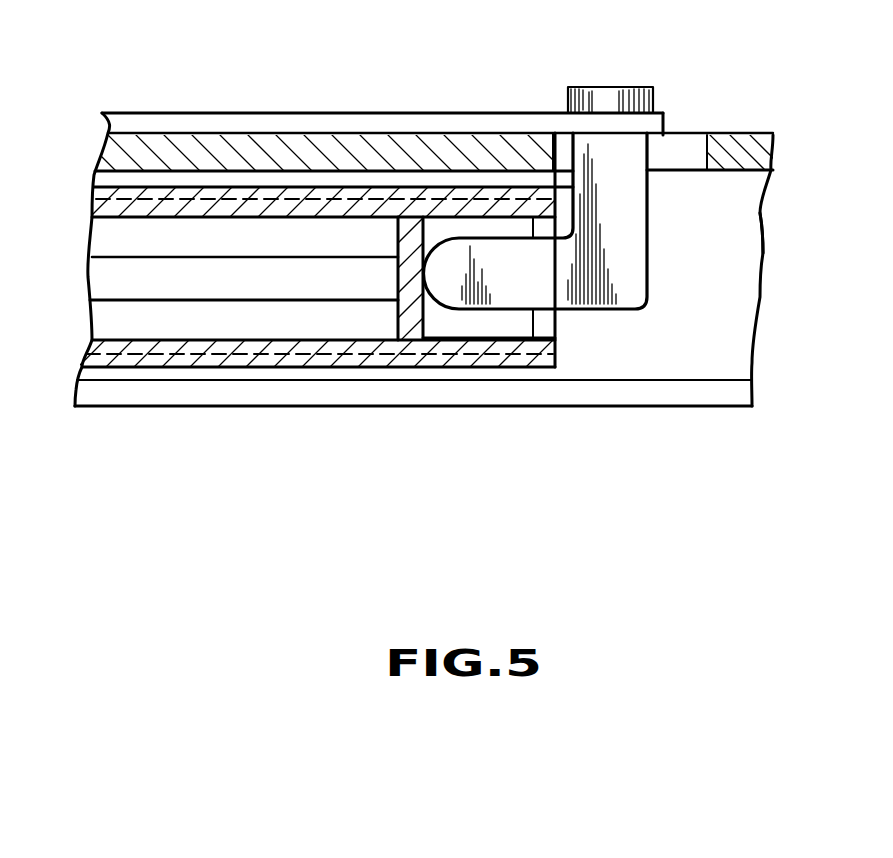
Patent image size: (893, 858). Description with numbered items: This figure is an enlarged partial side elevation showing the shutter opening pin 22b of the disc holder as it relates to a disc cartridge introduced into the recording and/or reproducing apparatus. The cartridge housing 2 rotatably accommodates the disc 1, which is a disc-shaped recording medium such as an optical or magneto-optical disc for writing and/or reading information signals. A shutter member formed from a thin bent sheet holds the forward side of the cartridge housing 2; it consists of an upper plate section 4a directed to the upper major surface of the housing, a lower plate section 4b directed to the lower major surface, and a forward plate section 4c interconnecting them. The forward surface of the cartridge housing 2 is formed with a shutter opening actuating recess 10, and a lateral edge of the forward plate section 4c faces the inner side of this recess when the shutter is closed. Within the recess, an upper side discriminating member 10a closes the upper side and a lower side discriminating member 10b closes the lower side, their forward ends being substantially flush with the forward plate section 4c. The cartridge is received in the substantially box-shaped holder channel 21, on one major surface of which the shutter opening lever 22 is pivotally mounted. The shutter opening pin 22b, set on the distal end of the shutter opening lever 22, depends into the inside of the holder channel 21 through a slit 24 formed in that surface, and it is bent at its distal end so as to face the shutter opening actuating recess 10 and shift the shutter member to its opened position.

The disc 1 is at (104, 273).
The cartridge housing 2 is at (137, 368).
The upper plate section 4a is at (242, 186).
The lower plate section 4b is at (283, 357).
The forward plate section 4c is at (545, 322).
The shutter opening actuating recess 10 is at (425, 312).
The upper side discriminating member 10a is at (541, 190).
The lower side discriminating member 10b is at (538, 360).
The holder channel 21 is at (718, 323).
The shutter opening lever 22 is at (412, 120).
The shutter opening pin 22b is at (627, 236).
The slit 24 is at (704, 150).